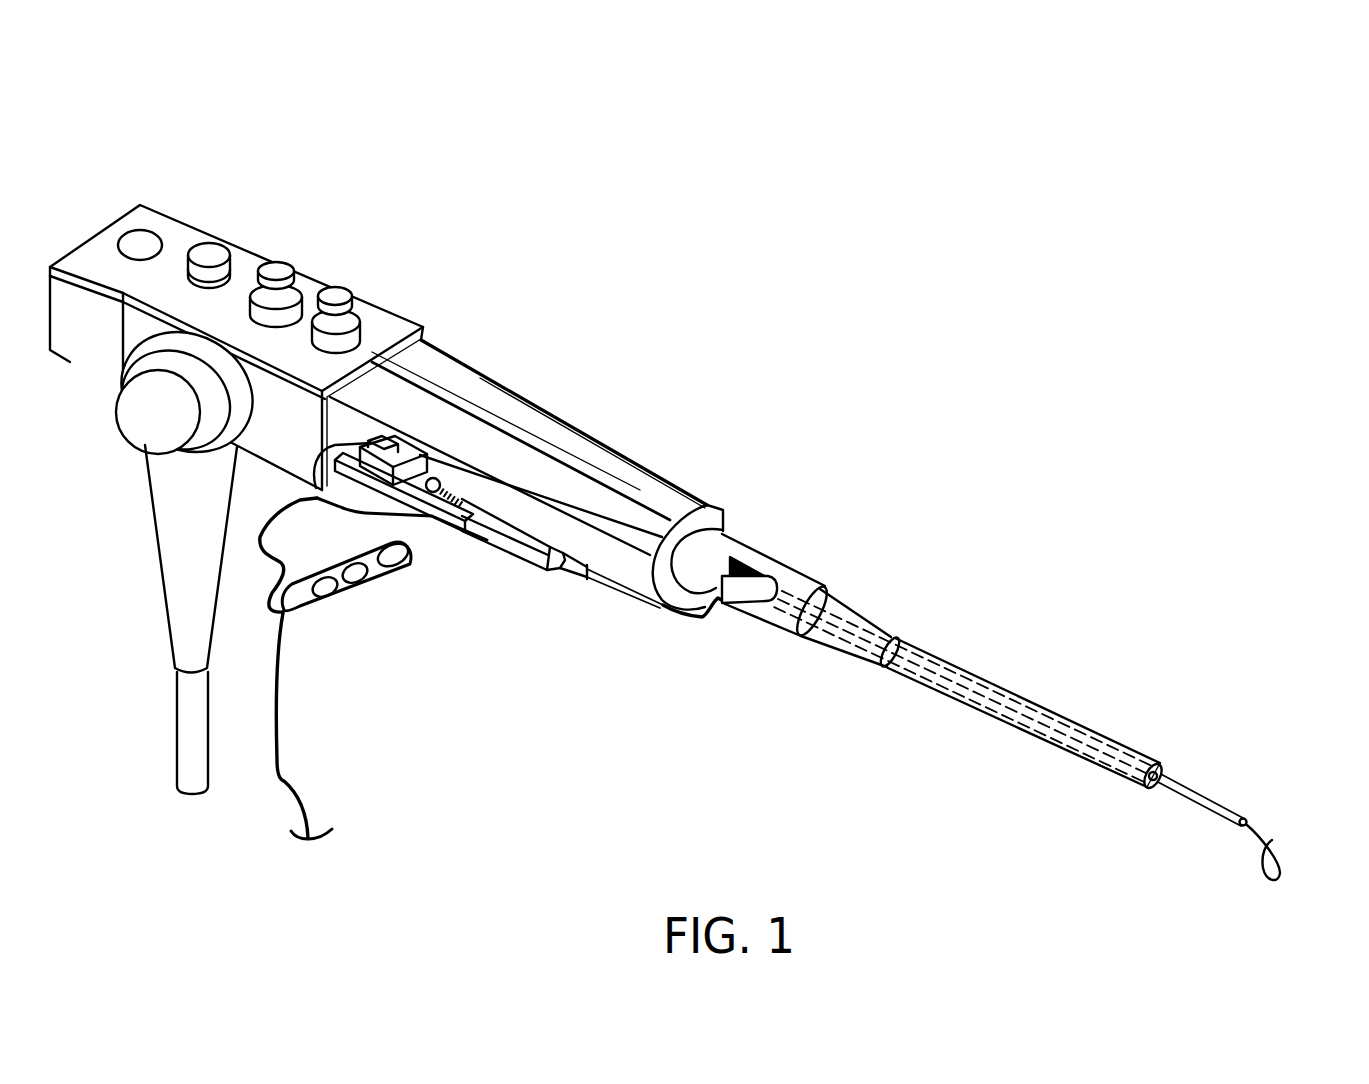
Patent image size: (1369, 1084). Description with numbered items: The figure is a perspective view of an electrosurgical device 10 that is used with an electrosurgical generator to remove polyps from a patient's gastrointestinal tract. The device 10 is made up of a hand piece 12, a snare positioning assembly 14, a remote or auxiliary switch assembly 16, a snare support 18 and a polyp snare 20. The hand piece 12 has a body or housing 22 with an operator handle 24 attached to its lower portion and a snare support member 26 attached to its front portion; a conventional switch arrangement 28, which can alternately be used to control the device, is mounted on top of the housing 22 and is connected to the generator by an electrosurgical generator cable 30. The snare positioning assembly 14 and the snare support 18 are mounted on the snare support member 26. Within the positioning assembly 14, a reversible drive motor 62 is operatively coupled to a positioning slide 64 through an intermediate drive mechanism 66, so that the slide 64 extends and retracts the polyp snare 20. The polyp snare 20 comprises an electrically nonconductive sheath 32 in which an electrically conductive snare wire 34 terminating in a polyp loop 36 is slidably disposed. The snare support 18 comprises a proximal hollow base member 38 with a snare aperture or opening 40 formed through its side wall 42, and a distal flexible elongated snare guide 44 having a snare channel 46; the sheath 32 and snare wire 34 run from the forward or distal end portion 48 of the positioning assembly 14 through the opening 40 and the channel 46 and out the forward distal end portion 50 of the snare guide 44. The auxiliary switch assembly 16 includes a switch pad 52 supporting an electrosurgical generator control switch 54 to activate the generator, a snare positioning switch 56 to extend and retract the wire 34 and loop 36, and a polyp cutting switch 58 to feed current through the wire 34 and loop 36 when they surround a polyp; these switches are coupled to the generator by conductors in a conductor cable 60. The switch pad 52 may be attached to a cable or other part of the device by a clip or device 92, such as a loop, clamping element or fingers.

The electrosurgical device 10 is at (413, 177).
The hand piece 12 is at (350, 200).
The snare positioning assembly 14 is at (502, 620).
The remote or auxiliary switch assembly 16 is at (308, 622).
The snare support 18 is at (902, 608).
The polyp snare 20 is at (675, 672).
The body or housing 22 is at (230, 225).
The operator handle 24 is at (147, 622).
The snare support member 26 is at (628, 373).
The switch arrangement 28 is at (278, 248).
The electrosurgical generator cable 30 is at (182, 727).
The electrically nonconductive sheath 32 is at (703, 618).
The electrically conductive snare wire 34 is at (1217, 813).
The polyp snare or loop 36 is at (1290, 840).
The proximal hollow base member 38 is at (793, 567).
The snare aperture or opening 40 is at (740, 560).
The side wall 42 is at (775, 579).
The distal flexible elongated snare guide 44 is at (955, 655).
The snare channel 46 is at (1005, 685).
The forward or distal end portion 48 is at (648, 603).
The forward distal end portion 50 is at (1127, 767).
The switch pad 52 is at (385, 568).
The electrosurgical generator control switch 54 is at (402, 562).
The snare positioning switch 56 is at (353, 578).
The polyp cutting switch 58 is at (330, 590).
The conductor cable 60 is at (282, 777).
The reversible drive motor 62 is at (393, 442).
The positioning slide 64 is at (507, 517).
The intermediate drive mechanism 66 is at (450, 490).
The clip or device 92 is at (300, 500).